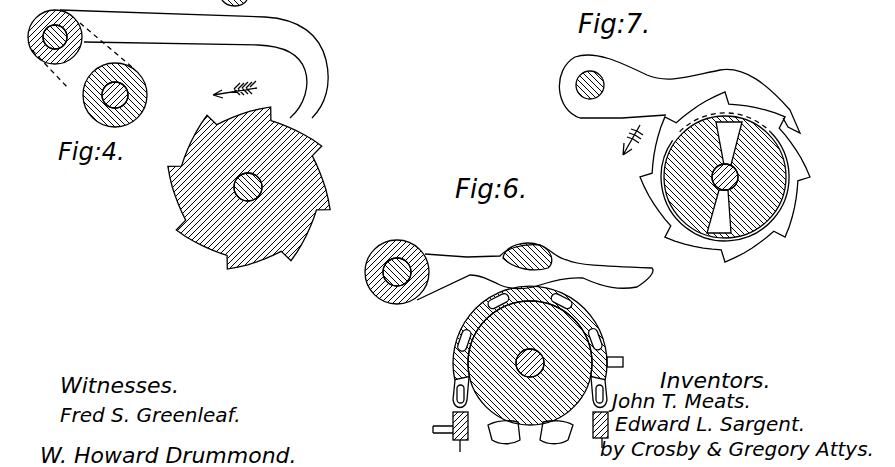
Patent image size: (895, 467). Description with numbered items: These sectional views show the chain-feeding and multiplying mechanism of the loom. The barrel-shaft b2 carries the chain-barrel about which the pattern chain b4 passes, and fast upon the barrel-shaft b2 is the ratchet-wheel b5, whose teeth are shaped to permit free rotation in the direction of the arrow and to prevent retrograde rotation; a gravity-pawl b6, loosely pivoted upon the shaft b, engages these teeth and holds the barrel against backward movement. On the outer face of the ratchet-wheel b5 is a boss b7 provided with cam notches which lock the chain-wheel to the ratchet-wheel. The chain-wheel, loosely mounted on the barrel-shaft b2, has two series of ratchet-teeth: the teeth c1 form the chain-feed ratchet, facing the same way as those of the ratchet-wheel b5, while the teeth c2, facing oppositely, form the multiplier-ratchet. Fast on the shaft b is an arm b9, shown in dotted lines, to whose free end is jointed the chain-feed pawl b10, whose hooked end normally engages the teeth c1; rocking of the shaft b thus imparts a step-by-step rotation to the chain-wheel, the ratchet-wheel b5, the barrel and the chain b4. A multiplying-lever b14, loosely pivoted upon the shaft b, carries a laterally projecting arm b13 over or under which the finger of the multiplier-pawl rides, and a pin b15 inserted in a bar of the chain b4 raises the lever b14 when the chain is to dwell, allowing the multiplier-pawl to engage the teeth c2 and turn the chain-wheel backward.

In FIG. 4, the shaft b is at (127, 100).
In FIG. 7, the shaft b is at (583, 97).
In FIG. 6, the shaft b is at (383, 278).
In FIG. 4, the barrel-shaft b2 is at (257, 188).
In FIG. 7, the barrel-shaft b2 is at (737, 187).
In FIG. 6, the barrel-shaft b2 is at (537, 358).
In FIG. 6, the chain b4 is at (453, 365).
In FIG. 7, the ratchet-wheel b5 is at (798, 152).
In FIG. 7, the gravity-pawl b6 is at (662, 88).
In FIG. 7, the boss b7 is at (725, 177).
In FIG. 4, the arm b9 is at (67, 88).
In FIG. 4, the chain-feed pawl b10 is at (205, 35).
In FIG. 6, the arm b13 is at (540, 247).
In FIG. 6, the multiplying-lever b14 is at (470, 260).
In FIG. 6, the pin b15 is at (623, 362).
In FIG. 4, the ratchet-teeth c1 is at (315, 150).
In FIG. 4, the ratchet-teeth c2 is at (252, 0).